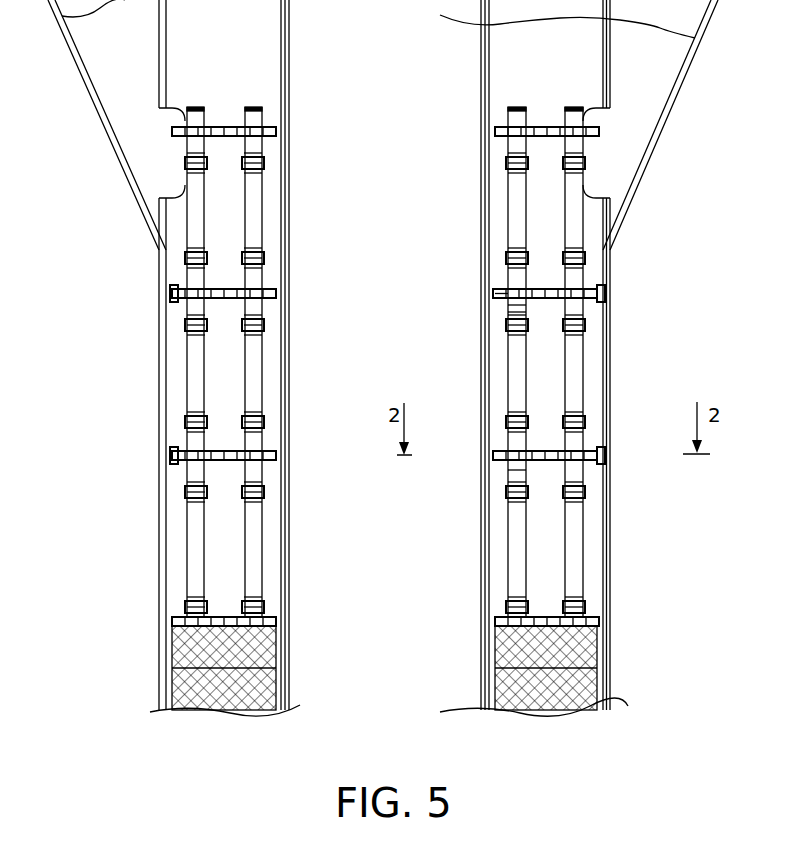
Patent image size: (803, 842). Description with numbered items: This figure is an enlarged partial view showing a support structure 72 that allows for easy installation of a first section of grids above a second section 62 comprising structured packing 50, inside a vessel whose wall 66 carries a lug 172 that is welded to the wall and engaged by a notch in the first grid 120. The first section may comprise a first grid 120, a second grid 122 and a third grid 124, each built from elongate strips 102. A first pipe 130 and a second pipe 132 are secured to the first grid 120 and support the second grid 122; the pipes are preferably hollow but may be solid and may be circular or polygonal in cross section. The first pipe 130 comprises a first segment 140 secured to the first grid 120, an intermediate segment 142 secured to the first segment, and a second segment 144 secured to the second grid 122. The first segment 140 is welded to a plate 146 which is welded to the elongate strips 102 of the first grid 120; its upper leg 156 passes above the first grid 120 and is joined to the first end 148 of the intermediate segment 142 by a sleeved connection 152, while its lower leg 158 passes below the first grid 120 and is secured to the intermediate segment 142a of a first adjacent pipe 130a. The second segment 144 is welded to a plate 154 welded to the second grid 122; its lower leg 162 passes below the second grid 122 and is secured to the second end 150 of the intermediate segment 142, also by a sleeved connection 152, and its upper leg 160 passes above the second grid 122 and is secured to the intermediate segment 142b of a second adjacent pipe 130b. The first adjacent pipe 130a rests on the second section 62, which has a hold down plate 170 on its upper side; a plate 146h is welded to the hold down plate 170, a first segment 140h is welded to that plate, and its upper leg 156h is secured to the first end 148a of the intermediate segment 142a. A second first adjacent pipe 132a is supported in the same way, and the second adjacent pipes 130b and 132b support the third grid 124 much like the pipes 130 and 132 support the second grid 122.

The packing 50 is at (182, 650).
The second section 62 is at (628, 683).
The wall 66 is at (606, 522).
The support structure 72 is at (672, 371).
The elongate strips 102 is at (510, 300).
The first grid 120 is at (596, 446).
The second grid 122 is at (595, 283).
The third grid 124 is at (600, 130).
The first pipe 130 is at (505, 388).
The first adjacent pipe 130a is at (505, 580).
The second adjacent pipe 130b is at (500, 185).
The second pipe 132 is at (581, 360).
The second first adjacent pipe 132a is at (603, 605).
The second adjacent pipe 132b is at (598, 208).
The first segment 140 is at (512, 443).
The first segment 140h is at (513, 600).
The intermediate segment 142 is at (515, 363).
The intermediate segment 142a is at (515, 560).
The intermediate segment 142b is at (510, 208).
The second segment 144 is at (512, 312).
The plate 146 is at (512, 470).
The plate 146h is at (510, 608).
The first end 148 is at (518, 405).
The first end 148a is at (522, 585).
The second end 150 is at (575, 312).
The sleeved connection 152 is at (500, 333).
The plate 154 is at (508, 297).
The upper leg 156 is at (518, 443).
The upper leg 156h is at (592, 580).
The lower leg 158 is at (515, 473).
The upper leg 160 is at (510, 290).
The lower leg 162 is at (512, 305).
The hold down plate 170 is at (602, 624).
The lug 172 is at (598, 468).